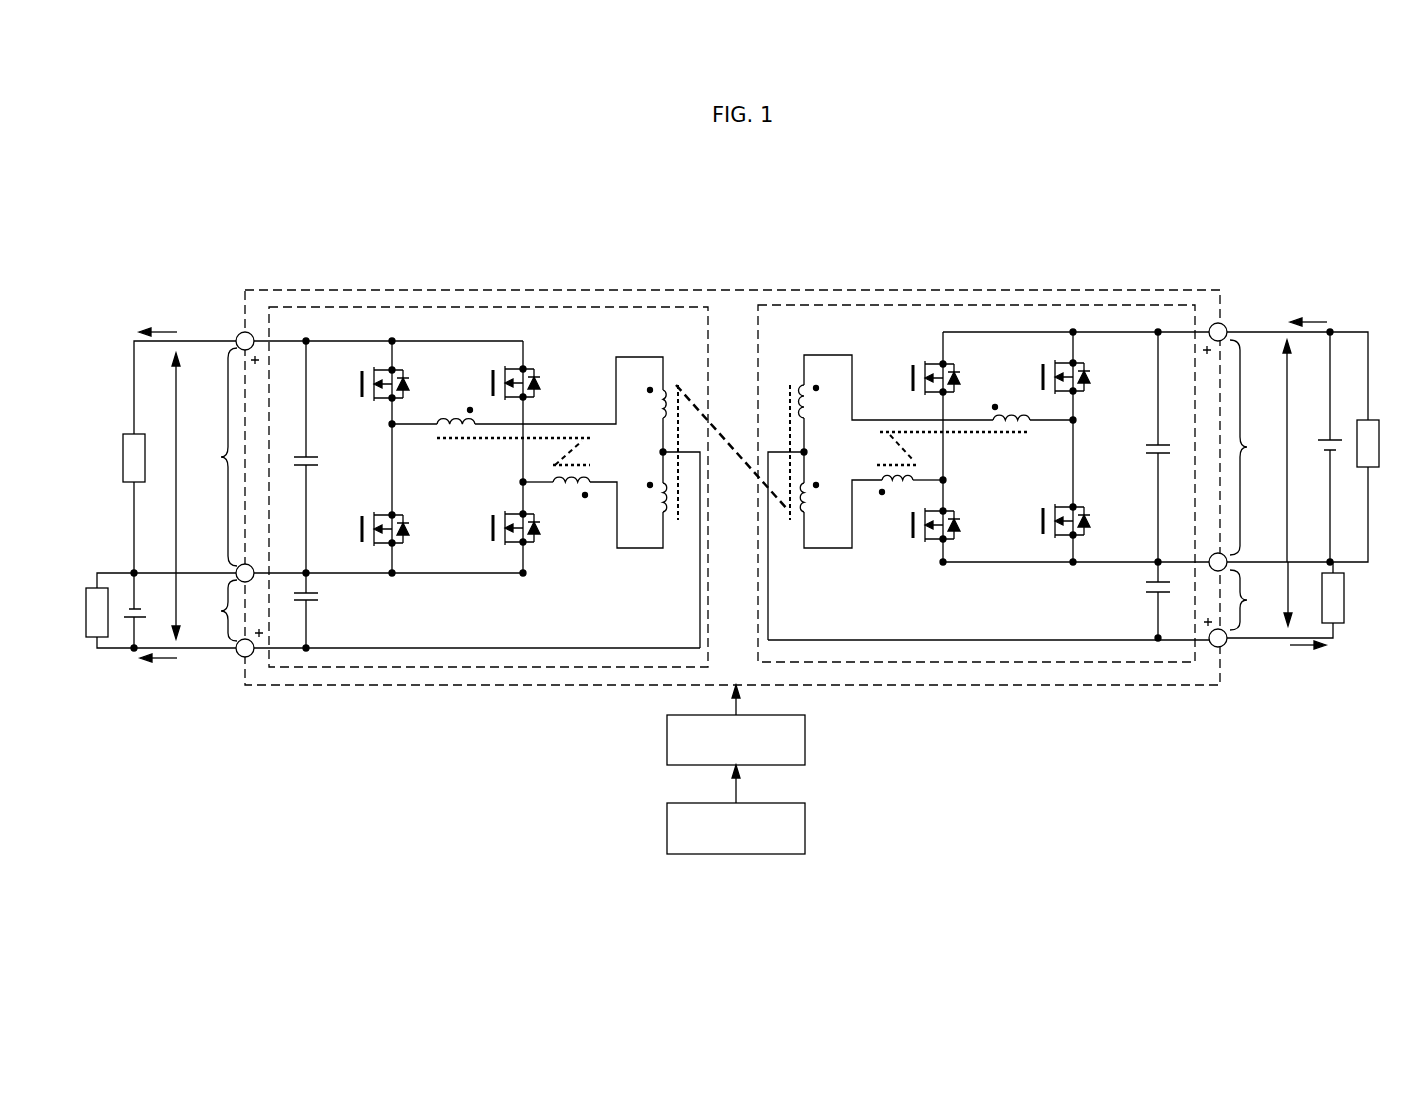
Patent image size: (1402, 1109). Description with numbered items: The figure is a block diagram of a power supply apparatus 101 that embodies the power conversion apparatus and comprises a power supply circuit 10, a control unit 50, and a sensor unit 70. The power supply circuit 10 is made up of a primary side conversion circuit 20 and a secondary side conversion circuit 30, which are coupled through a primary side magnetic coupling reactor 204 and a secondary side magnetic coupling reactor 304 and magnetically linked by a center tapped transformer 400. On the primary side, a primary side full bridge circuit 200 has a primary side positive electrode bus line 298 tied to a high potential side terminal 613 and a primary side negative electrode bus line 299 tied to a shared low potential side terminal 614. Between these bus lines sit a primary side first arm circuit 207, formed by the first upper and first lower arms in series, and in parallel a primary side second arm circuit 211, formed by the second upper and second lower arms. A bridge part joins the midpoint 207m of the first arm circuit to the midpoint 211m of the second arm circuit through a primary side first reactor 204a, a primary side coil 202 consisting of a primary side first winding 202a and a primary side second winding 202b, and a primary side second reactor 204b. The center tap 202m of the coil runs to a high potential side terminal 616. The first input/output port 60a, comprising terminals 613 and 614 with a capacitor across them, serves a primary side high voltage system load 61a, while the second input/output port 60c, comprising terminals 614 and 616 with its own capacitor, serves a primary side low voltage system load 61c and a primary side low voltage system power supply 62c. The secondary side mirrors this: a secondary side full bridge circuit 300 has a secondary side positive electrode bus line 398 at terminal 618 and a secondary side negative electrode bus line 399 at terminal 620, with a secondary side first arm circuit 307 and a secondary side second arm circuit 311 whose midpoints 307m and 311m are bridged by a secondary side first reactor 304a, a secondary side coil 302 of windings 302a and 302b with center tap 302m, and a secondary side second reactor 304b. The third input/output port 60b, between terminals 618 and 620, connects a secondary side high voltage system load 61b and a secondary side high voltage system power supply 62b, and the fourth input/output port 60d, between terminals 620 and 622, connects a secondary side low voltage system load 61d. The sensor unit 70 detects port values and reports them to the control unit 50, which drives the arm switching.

The power supply apparatus 101 is at (224, 238).
The power supply circuit 10 is at (1105, 288).
The primary side conversion circuit 20 is at (478, 283).
The primary side full bridge circuit 200 is at (567, 307).
The secondary side conversion circuit 30 is at (987, 280).
The secondary side full bridge circuit 300 is at (900, 305).
The primary side positive electrode bus line 298 is at (330, 341).
The primary side negative electrode bus line 299 is at (334, 578).
The secondary side positive electrode bus line 398 is at (1100, 332).
The secondary side negative electrode bus line 399 is at (1126, 568).
The primary side first arm circuit 207 is at (378, 570).
The primary side second arm circuit 211 is at (508, 570).
The secondary side first arm circuit 307 is at (1043, 558).
The secondary side second arm circuit 311 is at (917, 560).
The midpoint of the primary side first arm circuit 207m is at (390, 425).
The midpoint of the primary side second arm circuit 211m is at (520, 482).
The midpoint of the secondary side first arm circuit 307m is at (1076, 418).
The midpoint of the secondary side second arm circuit 311m is at (948, 481).
The primary side coil 202 is at (663, 333).
The primary side first winding 202a is at (653, 407).
The primary side second winding 202b is at (653, 520).
The center tap of the primary side coil 202m is at (660, 452).
The primary side magnetic coupling reactor 204 is at (506, 450).
The primary side first reactor 204a is at (438, 419).
The primary side second reactor 204b is at (585, 500).
The secondary side coil 302 is at (805, 330).
The secondary side first winding 302a is at (812, 403).
The secondary side second winding 302b is at (813, 520).
The center tap of the secondary side coil 302m is at (808, 451).
The secondary side magnetic coupling reactor 304 is at (986, 451).
The secondary side first reactor 304a is at (996, 416).
The secondary side second reactor 304b is at (882, 497).
The transformer 400 is at (735, 413).
The high potential side terminal of the first input/output port 613 is at (236, 337).
The low potential side terminal of the first and second input/output ports 614 is at (253, 568).
The high potential side terminal of the second input/output port 616 is at (241, 658).
The high potential side terminal of the third input/output port 618 is at (1228, 329).
The low potential side terminal of the third and fourth input/output ports 620 is at (1209, 556).
The high potential side terminal of the fourth input/output port 622 is at (1222, 649).
The primary side high voltage system load 61a is at (142, 433).
The secondary side high voltage system load 61b is at (1366, 419).
The primary side low voltage system load 61c is at (93, 642).
The secondary side low voltage system load 61d is at (1337, 626).
The primary side low voltage system power supply 62c is at (132, 601).
The secondary side high voltage system power supply 62b is at (1329, 457).
The first input/output port 60a is at (188, 439).
The third input/output port 60b is at (1278, 430).
The second input/output port 60c is at (188, 631).
The fourth input/output port 60d is at (1278, 620).
The control unit 50 is at (805, 740).
The sensor unit 70 is at (805, 827).